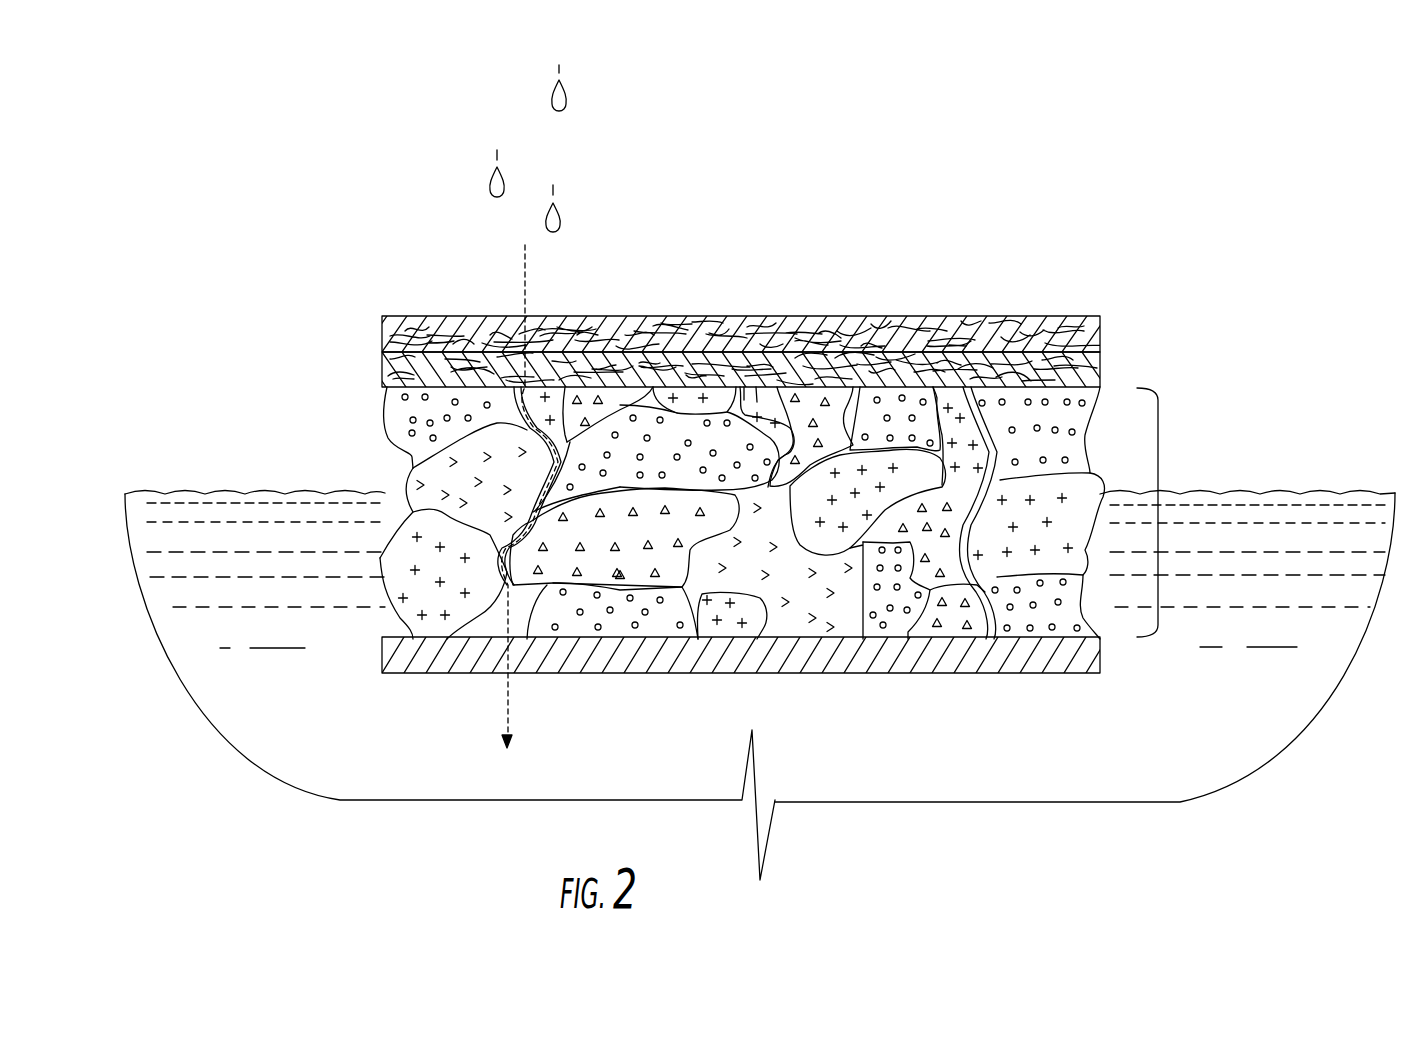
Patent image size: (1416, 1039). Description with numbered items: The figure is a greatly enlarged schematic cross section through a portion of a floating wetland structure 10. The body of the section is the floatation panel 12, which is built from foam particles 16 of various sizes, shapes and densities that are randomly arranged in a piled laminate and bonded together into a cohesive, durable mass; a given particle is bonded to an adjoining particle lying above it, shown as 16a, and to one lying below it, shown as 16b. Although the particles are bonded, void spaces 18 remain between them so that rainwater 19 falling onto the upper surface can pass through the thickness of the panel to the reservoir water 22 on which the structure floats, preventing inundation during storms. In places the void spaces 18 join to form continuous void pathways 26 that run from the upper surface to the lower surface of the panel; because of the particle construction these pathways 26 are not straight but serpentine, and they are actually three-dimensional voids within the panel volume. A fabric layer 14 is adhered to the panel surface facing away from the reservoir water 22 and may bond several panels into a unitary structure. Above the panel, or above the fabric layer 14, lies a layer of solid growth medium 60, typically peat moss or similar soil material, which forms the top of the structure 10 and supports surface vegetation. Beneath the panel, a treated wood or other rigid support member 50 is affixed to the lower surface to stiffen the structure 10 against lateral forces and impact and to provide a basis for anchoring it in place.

The structure 10 is at (1160, 253).
The floatation panel 12 is at (1160, 512).
The fabric layer 14 is at (1102, 356).
The foam particles 16 is at (408, 500).
The foam particle positioned above 16a is at (398, 416).
The foam particle positioned below 16b is at (397, 578).
The void spaces 18 is at (743, 400).
The rainwater 19 is at (575, 91).
The reservoir water 22 is at (215, 497).
The void pathways 26 is at (520, 623).
The support member 50 is at (407, 655).
The layer of solid growth medium 60 is at (1012, 322).